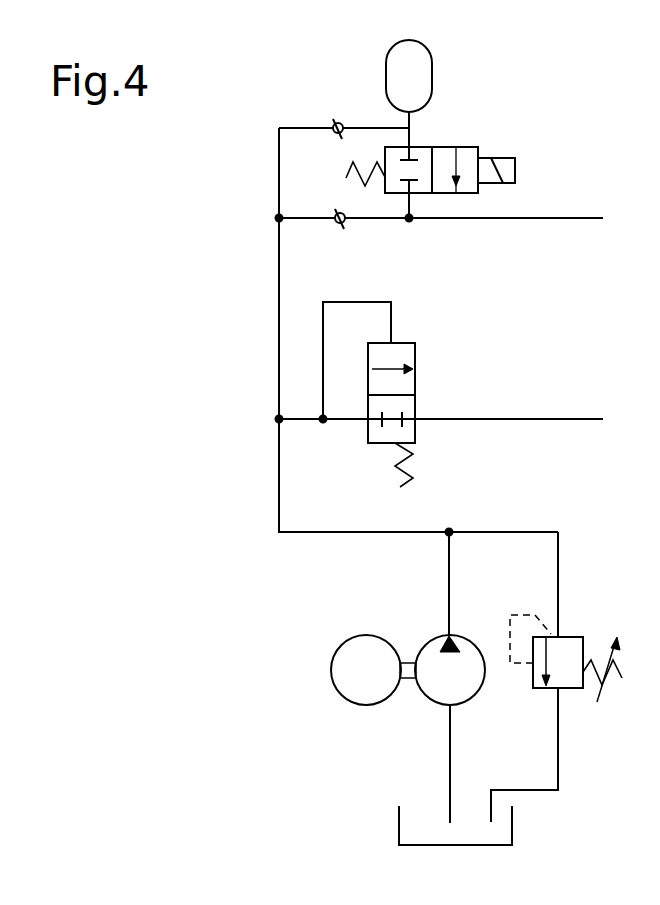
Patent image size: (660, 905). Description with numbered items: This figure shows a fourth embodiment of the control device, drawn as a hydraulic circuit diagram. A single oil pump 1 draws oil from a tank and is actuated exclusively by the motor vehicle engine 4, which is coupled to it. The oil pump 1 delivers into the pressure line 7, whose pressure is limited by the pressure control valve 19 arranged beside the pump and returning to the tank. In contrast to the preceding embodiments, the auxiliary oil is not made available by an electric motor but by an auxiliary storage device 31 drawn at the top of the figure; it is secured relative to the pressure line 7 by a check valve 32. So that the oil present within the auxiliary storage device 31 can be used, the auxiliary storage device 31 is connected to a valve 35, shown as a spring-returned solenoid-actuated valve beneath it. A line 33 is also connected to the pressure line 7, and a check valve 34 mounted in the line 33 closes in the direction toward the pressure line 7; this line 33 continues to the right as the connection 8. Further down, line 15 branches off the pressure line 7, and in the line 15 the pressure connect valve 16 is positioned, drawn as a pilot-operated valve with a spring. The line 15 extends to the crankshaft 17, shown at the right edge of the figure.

The oil pump 1 is at (433, 692).
The motor vehicle engine 4 is at (352, 695).
The pressure line 7 is at (278, 307).
The line to consumer 8 is at (451, 219).
The line 15 is at (298, 421).
The pressure connect valve 16 is at (405, 352).
The crankshaft 17 is at (457, 419).
The pressure control valve 19 is at (570, 650).
The auxiliary storage device 31 is at (418, 69).
The check valve 32 is at (333, 121).
The line 33 is at (297, 220).
The check valve 34 is at (335, 212).
The valve 35 is at (442, 158).